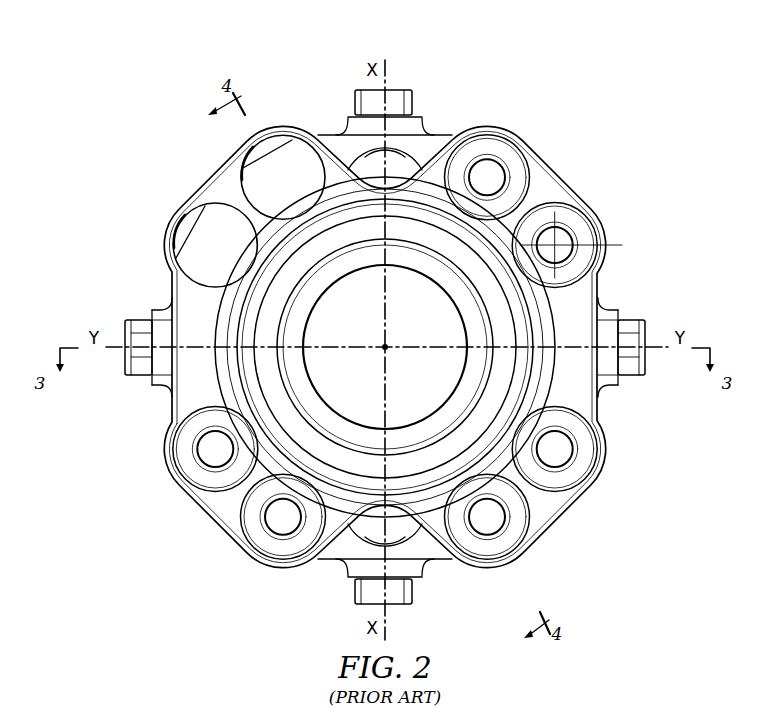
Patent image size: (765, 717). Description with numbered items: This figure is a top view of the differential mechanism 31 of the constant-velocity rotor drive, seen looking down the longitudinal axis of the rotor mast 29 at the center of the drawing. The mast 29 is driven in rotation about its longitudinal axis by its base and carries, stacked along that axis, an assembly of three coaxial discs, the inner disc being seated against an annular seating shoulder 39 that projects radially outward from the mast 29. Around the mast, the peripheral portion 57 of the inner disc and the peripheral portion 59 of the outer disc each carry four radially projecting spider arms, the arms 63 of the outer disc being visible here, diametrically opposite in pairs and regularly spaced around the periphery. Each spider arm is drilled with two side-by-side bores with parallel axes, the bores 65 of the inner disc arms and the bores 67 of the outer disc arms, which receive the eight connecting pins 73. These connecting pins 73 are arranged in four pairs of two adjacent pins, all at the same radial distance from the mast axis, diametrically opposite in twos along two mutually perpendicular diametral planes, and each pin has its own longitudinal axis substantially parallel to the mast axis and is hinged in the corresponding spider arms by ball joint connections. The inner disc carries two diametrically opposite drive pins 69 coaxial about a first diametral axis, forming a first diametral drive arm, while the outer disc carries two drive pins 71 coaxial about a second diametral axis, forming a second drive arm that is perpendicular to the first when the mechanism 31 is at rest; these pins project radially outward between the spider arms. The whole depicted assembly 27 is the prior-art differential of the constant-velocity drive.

The prior art housing assembly 27 is at (577, 82).
The mast 29 is at (448, 303).
The differential mechanism 31 is at (186, 190).
The seating shoulder 39 is at (600, 406).
The peripheral portion 57 is at (340, 143).
The peripheral portion 59 is at (190, 310).
The spider arms 63 is at (550, 172).
The bores 65 is at (222, 173).
The bores 67 is at (320, 162).
The drive pins 69 is at (414, 104).
The drive pins 71 is at (137, 375).
The connecting pins 73 is at (505, 152).